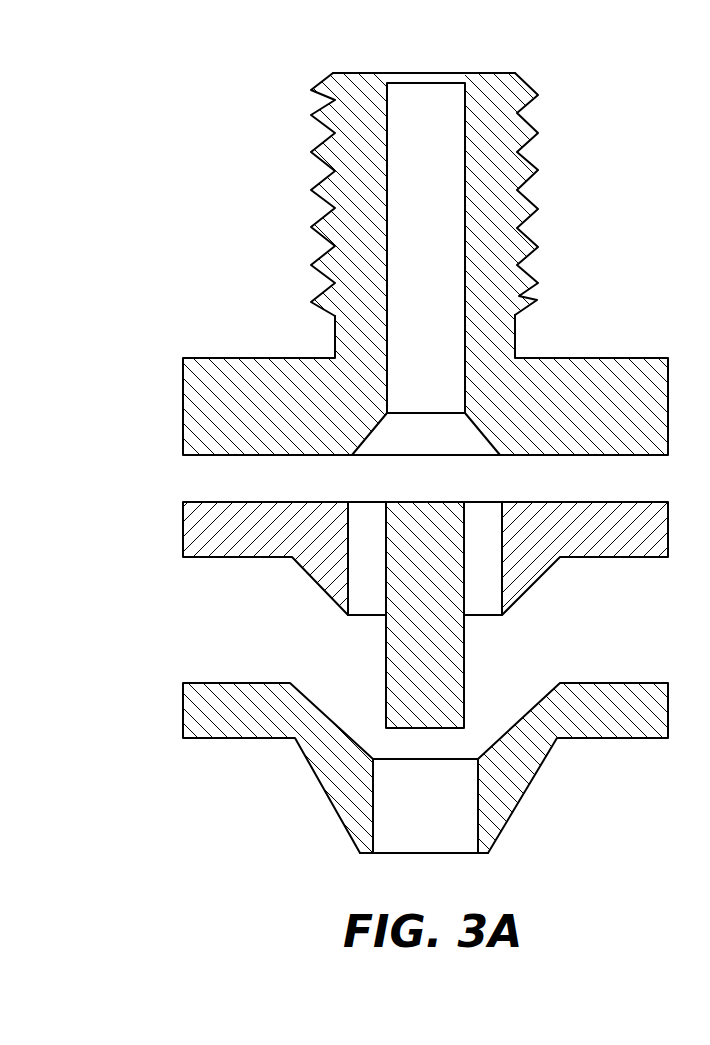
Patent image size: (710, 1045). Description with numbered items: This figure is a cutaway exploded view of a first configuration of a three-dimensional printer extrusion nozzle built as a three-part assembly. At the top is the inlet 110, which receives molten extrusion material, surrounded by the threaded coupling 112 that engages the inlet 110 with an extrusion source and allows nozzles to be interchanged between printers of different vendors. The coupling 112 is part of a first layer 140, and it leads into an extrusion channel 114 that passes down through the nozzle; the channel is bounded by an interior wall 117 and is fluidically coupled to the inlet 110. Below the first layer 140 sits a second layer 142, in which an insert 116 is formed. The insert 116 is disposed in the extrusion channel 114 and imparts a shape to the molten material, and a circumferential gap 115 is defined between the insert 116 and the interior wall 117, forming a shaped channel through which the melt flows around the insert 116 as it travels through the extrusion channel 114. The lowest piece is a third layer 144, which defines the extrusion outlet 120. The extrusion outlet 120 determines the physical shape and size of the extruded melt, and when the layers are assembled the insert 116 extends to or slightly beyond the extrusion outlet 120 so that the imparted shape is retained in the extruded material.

The inlet 110 is at (379, 259).
The coupling 112 is at (539, 133).
The extrusion channel 114 is at (426, 403).
The circumferential gap 115 is at (371, 622).
The insert 116 is at (413, 512).
The interior wall 117 is at (389, 250).
The extrusion outlet 120 is at (481, 856).
The first layer 140 is at (183, 400).
The second layer 142 is at (183, 525).
The third layer 144 is at (183, 710).